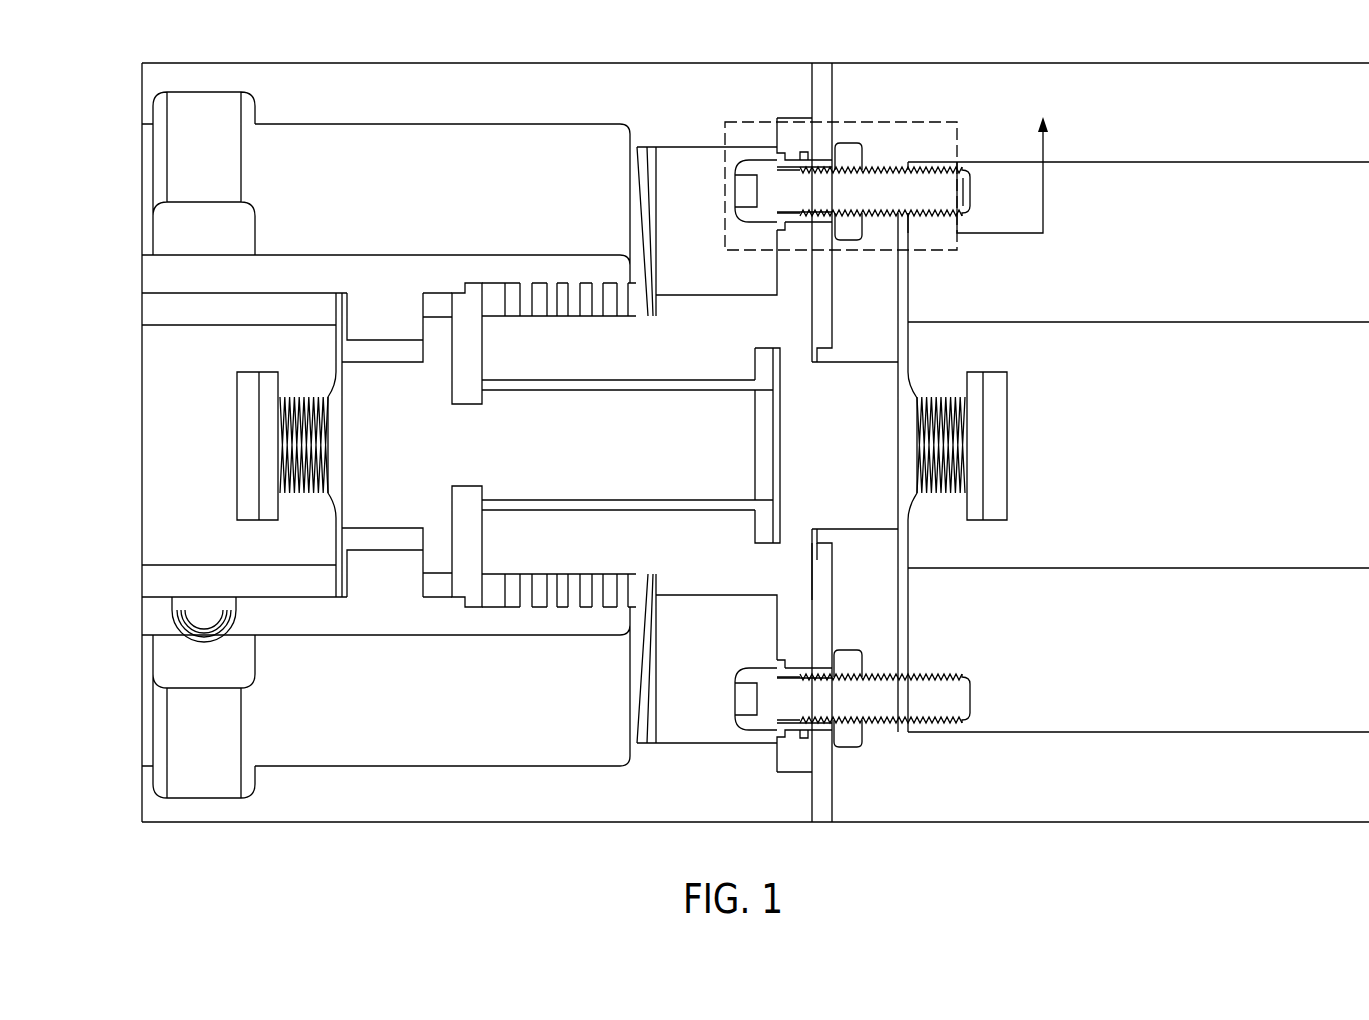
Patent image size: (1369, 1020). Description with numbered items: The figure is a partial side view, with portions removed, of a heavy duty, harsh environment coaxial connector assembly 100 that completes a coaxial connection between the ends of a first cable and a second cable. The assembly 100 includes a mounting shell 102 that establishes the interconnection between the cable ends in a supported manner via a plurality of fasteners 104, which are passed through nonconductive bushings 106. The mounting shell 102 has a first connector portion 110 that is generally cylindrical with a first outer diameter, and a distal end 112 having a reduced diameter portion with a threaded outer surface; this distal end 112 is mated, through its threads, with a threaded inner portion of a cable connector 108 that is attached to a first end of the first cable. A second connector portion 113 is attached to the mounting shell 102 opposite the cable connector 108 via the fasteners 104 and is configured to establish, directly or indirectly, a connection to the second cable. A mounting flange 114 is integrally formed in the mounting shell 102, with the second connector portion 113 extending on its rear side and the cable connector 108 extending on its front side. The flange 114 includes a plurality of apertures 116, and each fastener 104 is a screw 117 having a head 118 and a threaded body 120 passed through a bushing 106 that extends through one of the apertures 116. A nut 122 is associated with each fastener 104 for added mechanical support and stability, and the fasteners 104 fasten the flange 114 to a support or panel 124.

The coaxial connector assembly 100 is at (108, 64).
The mounting shell 102 is at (682, 177).
The fastener 104 is at (955, 690).
The nonconductive bushing 106 is at (818, 727).
The cable connector 108 is at (400, 737).
The first connector portion 110 is at (695, 712).
The distal end 112 is at (527, 580).
The second connector portion 113 is at (1213, 707).
The mounting flange 114 is at (793, 762).
The aperture 116 is at (823, 208).
The screw 117 is at (963, 200).
The head 118 is at (765, 167).
The threaded body 120 is at (927, 188).
The nut 122 is at (845, 228).
The support or panel 124 is at (820, 582).